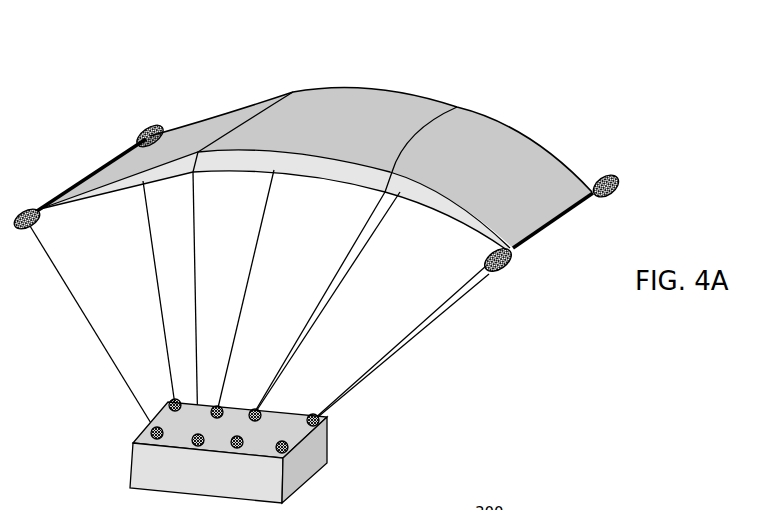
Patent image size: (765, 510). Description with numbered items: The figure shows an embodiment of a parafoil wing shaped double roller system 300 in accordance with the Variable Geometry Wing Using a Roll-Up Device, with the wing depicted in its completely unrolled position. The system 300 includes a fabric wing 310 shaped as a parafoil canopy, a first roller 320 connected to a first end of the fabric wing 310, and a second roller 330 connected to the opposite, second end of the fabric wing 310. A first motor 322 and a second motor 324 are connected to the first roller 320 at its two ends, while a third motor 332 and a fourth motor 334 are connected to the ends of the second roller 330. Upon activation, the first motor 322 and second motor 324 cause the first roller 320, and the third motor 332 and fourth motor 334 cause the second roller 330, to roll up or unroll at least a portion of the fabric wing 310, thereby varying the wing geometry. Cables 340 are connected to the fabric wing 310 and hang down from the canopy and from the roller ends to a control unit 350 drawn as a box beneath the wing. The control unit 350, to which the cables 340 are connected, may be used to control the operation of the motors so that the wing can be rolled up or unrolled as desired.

The parafoil wing shaped double roller system 300 is at (150, 55).
The fabric wing 310 is at (428, 58).
The first roller 320 is at (562, 215).
The first motor 322 is at (505, 268).
The second motor 324 is at (619, 178).
The second roller 330 is at (67, 192).
The third motor 332 is at (20, 230).
The fourth motor 334 is at (140, 130).
The cables 340 is at (104, 347).
The control unit 350 is at (140, 473).